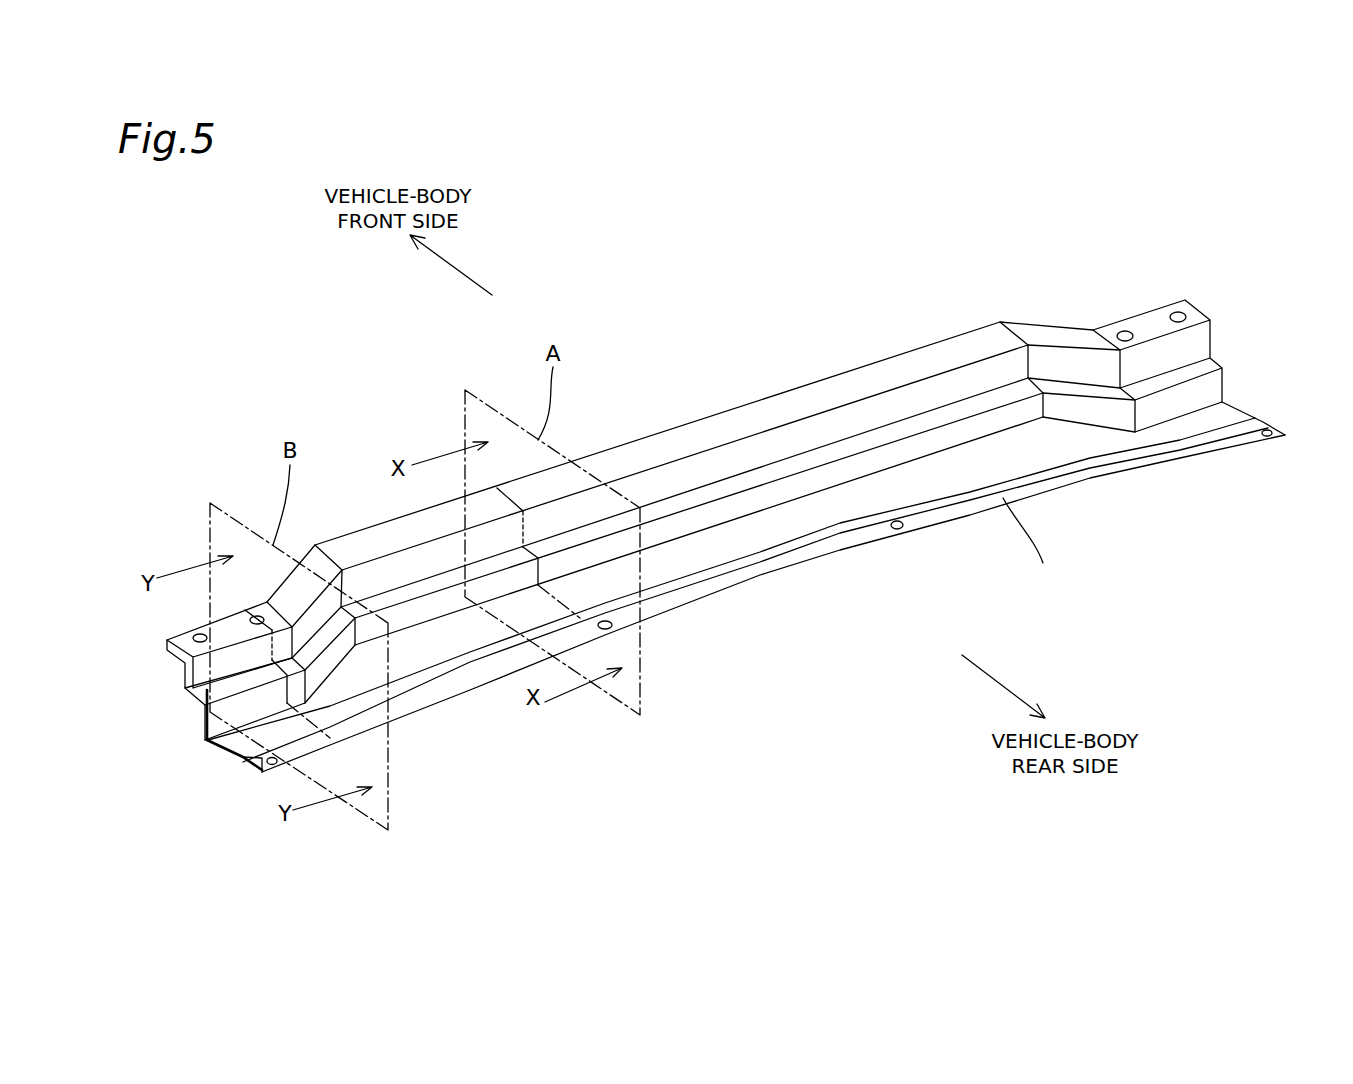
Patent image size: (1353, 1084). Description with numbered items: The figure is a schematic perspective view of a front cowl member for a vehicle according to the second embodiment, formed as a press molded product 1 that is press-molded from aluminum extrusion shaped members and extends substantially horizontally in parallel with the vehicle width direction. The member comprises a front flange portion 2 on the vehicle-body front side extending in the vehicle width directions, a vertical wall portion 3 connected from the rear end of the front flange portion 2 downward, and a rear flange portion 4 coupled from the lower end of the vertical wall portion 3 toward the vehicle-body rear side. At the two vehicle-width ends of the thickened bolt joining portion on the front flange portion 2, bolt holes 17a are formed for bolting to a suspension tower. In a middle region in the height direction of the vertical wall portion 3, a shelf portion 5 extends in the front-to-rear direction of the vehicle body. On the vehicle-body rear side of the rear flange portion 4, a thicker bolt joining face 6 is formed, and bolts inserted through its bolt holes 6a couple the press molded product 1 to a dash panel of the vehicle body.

The press molded product 1 is at (814, 878).
In FIG. 5, the front flange portion 2 is at (755, 415).
In FIG. 5, the vertical wall portion 3 is at (808, 482).
In FIG. 5, the rear flange portion 4 is at (771, 538).
In FIG. 5, the shelf portion 5 is at (897, 432).
In FIG. 5, the bolt joining face 6 is at (746, 618).
In FIG. 5, the bolt holes 6a is at (268, 765).
In FIG. 5, the bolt holes 17a is at (250, 618).